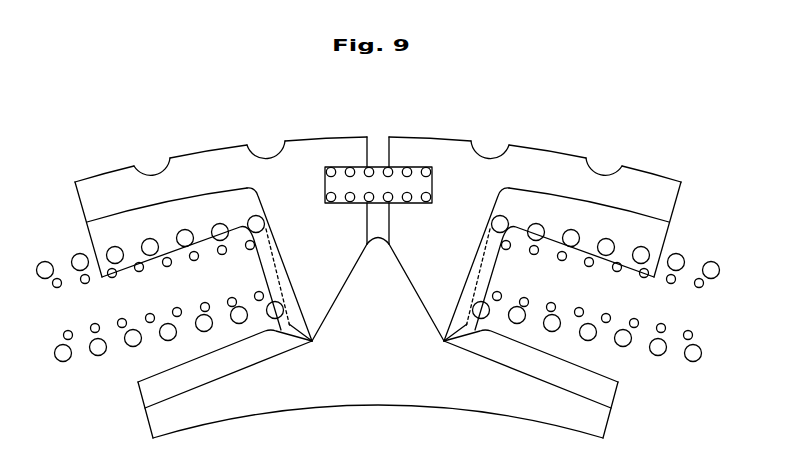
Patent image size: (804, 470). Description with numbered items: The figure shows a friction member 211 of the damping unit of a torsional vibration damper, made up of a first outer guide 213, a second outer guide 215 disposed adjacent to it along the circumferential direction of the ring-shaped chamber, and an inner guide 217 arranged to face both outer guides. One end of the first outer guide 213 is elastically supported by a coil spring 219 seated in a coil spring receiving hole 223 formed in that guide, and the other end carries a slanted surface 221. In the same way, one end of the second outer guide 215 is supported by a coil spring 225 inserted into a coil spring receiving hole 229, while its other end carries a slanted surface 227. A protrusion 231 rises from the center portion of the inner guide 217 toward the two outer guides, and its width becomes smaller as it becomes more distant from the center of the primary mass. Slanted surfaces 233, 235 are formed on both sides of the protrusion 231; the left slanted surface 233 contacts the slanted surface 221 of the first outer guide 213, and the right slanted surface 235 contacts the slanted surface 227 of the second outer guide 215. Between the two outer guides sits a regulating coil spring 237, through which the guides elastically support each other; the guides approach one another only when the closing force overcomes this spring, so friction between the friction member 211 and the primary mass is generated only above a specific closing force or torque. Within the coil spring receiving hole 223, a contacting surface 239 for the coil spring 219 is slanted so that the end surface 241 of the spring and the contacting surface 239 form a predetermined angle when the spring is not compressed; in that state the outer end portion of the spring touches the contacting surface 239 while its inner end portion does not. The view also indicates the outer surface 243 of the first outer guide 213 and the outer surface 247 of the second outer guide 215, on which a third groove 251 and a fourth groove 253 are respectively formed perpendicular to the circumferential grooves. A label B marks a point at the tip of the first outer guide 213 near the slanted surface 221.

The friction member 211 is at (664, 120).
The first outer guide 213 is at (227, 150).
The second outer guide 215 is at (529, 150).
The inner guide 217 is at (497, 410).
The coil spring 219 is at (41, 262).
The slanted surface 221 is at (343, 408).
The coil spring receiving hole 223 is at (189, 300).
The coil spring 225 is at (681, 254).
The slanted surface 227 is at (440, 293).
The coil spring receiving hole 229 is at (607, 300).
The protrusion 231 is at (378, 351).
The slanted surface 233 is at (338, 302).
The slanted surface 235 is at (411, 292).
The regulating coil spring 237 is at (375, 166).
The contacting surface 239 is at (273, 242).
The end surface 241 is at (292, 336).
The outer surface 243 is at (192, 152).
The outer surface 247 is at (569, 152).
The third groove 251 is at (156, 164).
The fourth groove 253 is at (487, 144).
The point B is at (304, 340).